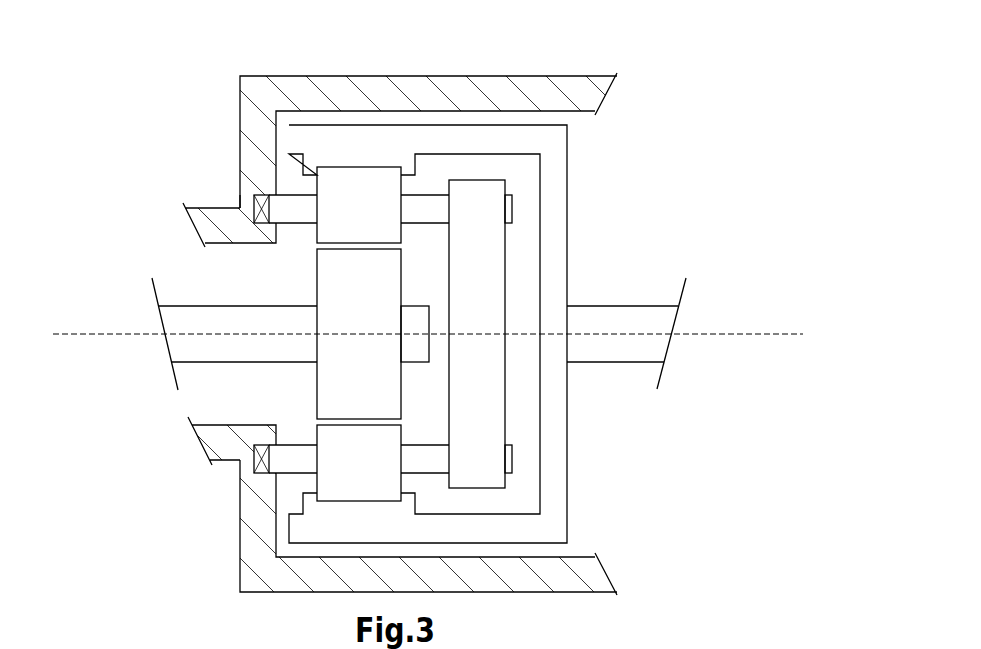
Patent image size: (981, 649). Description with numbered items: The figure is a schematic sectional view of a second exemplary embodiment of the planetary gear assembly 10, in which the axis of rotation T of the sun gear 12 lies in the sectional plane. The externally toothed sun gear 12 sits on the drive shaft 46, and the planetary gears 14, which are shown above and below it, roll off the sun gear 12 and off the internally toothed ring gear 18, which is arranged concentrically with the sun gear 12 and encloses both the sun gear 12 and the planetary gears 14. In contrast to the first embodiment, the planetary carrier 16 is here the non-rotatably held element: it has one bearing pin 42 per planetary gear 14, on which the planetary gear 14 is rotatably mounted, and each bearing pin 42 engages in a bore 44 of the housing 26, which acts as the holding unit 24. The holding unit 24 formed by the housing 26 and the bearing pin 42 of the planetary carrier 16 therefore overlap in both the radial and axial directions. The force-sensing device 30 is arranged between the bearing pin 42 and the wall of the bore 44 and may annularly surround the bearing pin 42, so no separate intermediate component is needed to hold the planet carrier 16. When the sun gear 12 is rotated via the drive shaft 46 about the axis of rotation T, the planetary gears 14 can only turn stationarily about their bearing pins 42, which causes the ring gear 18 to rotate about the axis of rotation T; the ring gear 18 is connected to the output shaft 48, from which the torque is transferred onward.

The planetary gear assembly 10 is at (101, 75).
The sun gear 12 is at (339, 320).
The planetary gears 14 is at (339, 223).
The planetary carrier 16 is at (459, 297).
The ring gear 18 is at (562, 180).
The holding unit 24 is at (490, 324).
The housing 26 is at (288, 100).
The force-sensing device 30 is at (262, 212).
The bearing pin 42 is at (415, 208).
The bore 44 is at (235, 182).
The drive shaft 46 is at (199, 318).
The output shaft 48 is at (651, 320).
The axis of rotation T is at (110, 333).